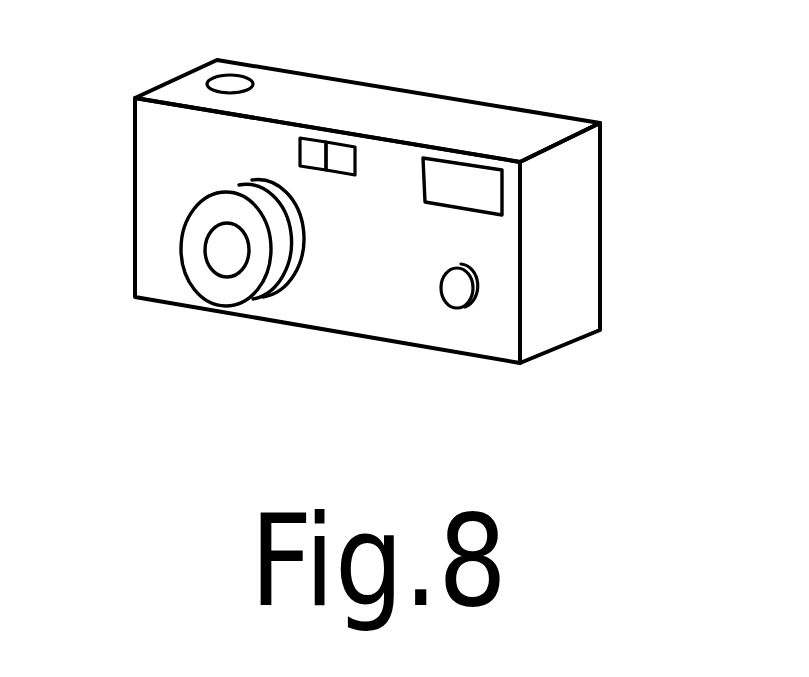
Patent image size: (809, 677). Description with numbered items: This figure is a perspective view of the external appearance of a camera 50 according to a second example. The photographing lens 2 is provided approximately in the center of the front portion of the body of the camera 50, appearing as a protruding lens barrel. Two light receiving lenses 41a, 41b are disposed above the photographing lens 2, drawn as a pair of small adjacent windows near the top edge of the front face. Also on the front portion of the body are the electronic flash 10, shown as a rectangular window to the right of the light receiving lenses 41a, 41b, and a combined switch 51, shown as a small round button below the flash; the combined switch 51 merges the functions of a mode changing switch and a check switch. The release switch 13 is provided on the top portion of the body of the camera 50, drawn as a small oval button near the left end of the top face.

The camera 50 is at (636, 237).
The release switch 13 is at (150, 90).
The photographing lens 2 is at (220, 253).
The light receiving lens 41a is at (310, 137).
The light receiving lens 41b is at (340, 175).
The electronic flash 10 is at (475, 167).
The combined switch 51 is at (468, 307).